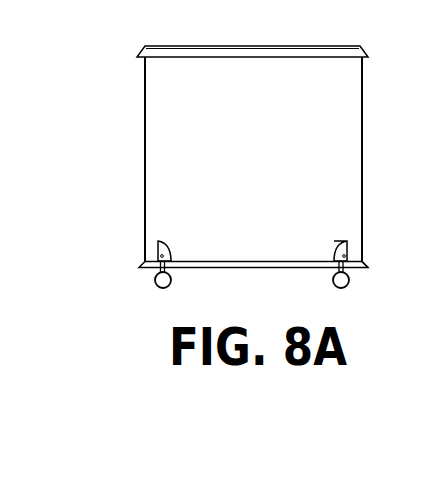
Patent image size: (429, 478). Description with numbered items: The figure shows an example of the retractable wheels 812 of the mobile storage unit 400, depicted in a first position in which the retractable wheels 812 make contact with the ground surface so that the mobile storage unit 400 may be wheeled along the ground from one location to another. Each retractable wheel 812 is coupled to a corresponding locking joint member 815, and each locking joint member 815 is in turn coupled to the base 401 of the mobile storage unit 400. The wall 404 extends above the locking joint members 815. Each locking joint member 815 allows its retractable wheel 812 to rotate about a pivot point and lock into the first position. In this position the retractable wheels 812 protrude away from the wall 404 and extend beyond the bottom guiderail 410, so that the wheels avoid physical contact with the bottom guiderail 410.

The mobile storage unit 400 is at (107, 160).
The wall 404 is at (351, 178).
The base 401 is at (226, 257).
The locking joint member 815 is at (164, 240).
The retractable wheel 812 is at (156, 287).
The bottom guiderail 410 is at (365, 267).